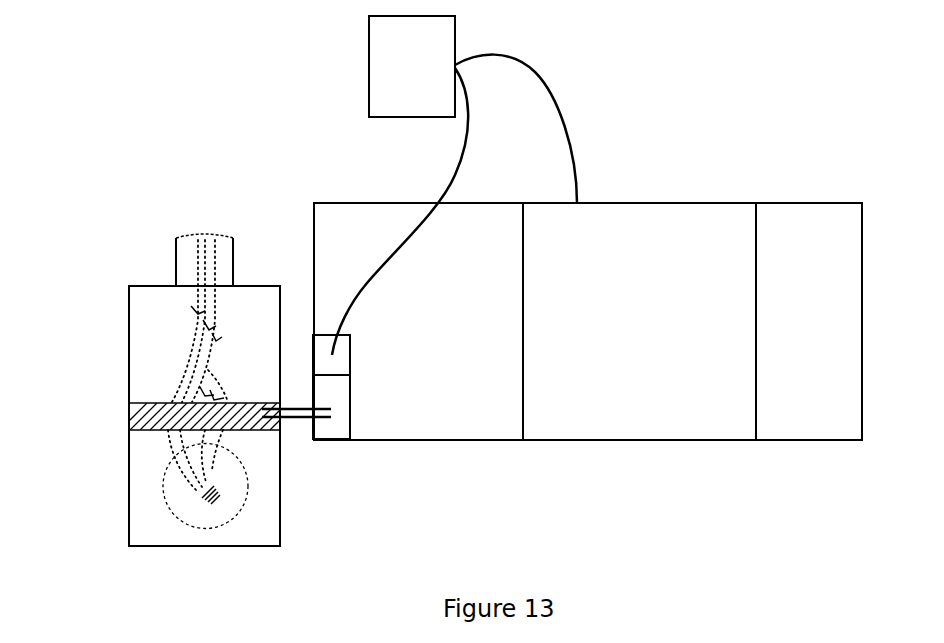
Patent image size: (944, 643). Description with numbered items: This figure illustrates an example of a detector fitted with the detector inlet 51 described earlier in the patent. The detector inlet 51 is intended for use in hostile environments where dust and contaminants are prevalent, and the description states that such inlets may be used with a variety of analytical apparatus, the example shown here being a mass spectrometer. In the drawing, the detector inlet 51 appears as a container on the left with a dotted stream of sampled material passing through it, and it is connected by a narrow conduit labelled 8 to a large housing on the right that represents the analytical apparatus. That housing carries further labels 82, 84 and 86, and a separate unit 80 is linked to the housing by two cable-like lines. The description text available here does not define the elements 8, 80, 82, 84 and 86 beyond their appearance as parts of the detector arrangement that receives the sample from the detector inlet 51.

The detector inlet 51 is at (105, 383).
The probe / tube 8 is at (332, 412).
The control unit 80 is at (454, 185).
The sensor housing 82 is at (324, 346).
The analysis unit housing 84 is at (613, 414).
The housing bottom wall 86 is at (686, 452).